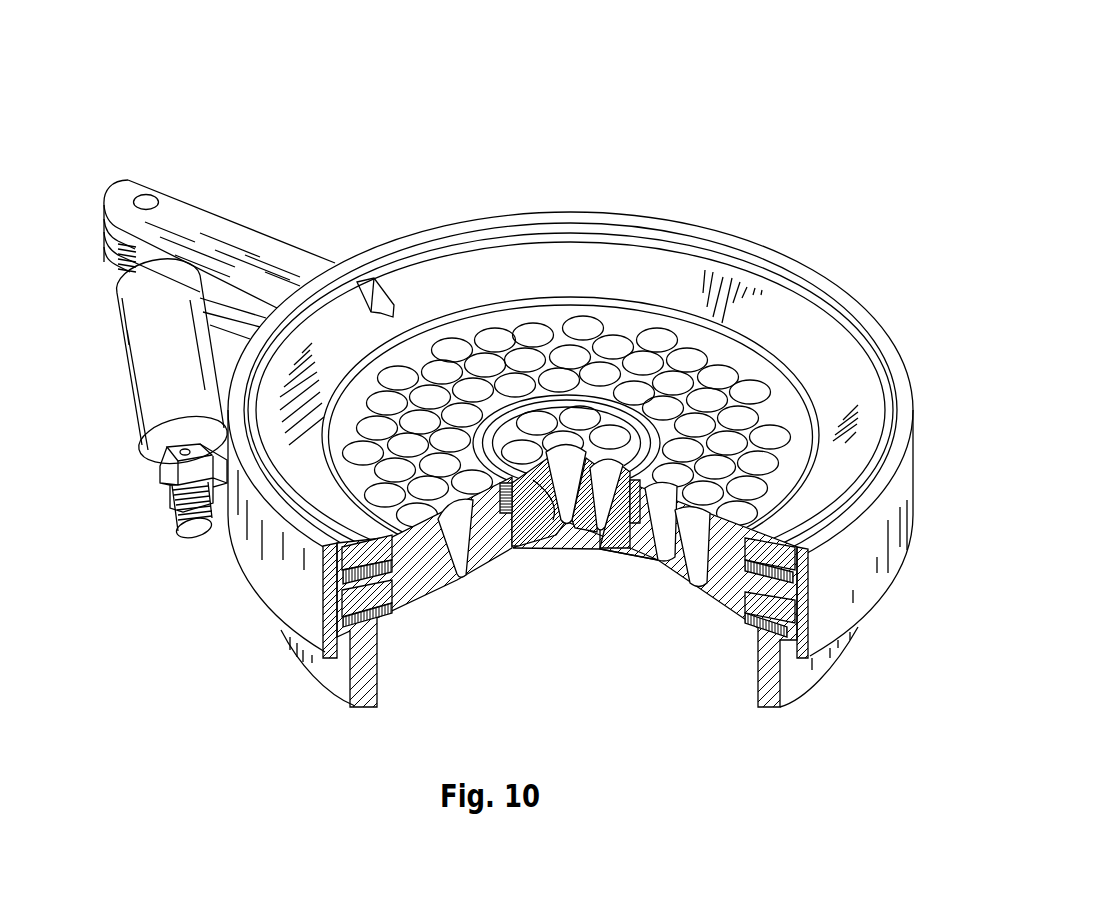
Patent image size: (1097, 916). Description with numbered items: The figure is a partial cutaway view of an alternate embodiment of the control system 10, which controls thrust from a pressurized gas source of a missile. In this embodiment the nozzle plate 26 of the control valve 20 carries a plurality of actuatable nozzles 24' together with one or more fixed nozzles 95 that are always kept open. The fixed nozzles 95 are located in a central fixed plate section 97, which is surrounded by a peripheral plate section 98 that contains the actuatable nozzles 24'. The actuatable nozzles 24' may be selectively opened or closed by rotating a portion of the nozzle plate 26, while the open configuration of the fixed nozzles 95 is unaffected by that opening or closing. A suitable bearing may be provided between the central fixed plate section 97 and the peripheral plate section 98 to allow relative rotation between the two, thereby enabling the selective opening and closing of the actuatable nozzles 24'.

The control system 10 is at (337, 128).
The control valve 20 is at (455, 195).
The actuatable nozzles 24' is at (565, 580).
The nozzle plate 26 is at (212, 592).
The fixed nozzles 95 is at (554, 572).
The central fixed plate section 97 is at (538, 537).
The peripheral plate section 98 is at (719, 578).